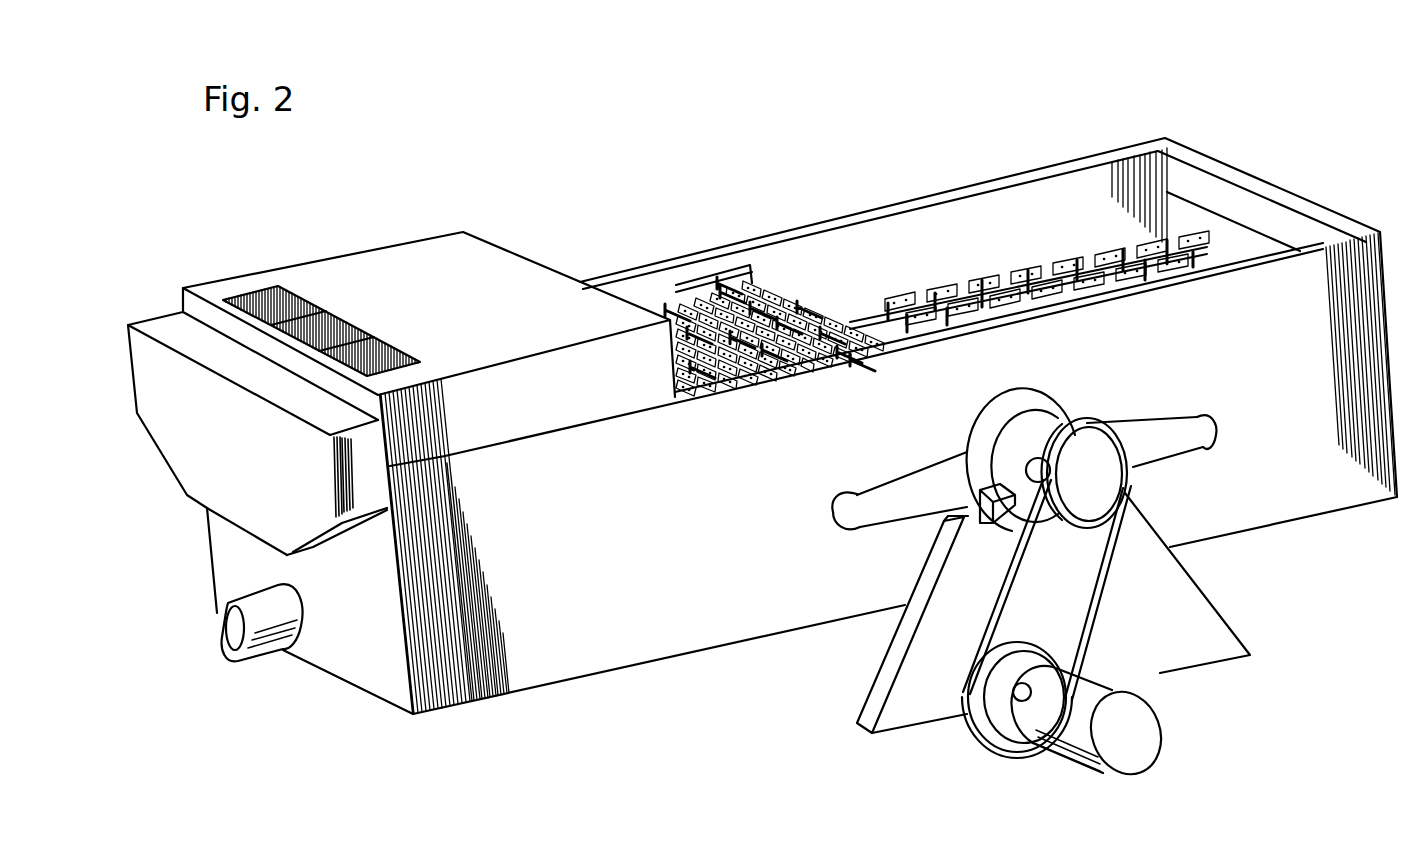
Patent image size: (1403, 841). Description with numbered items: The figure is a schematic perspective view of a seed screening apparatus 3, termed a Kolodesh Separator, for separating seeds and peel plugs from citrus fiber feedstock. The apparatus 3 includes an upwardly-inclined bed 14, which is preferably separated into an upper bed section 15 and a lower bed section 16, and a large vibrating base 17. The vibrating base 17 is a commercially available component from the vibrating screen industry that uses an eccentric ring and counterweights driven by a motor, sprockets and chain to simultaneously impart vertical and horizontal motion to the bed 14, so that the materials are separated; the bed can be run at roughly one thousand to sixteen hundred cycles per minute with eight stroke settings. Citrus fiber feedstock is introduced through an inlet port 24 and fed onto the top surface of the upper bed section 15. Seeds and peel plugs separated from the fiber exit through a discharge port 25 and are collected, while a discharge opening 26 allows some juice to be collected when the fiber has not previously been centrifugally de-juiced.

The seed screening apparatus 3 is at (439, 188).
The upwardly-inclined bed 14 is at (820, 219).
The upper bed section 15 is at (678, 317).
The lower bed section 16 is at (1003, 278).
The vibrating base 17 is at (708, 562).
The inlet port 24 is at (268, 293).
The discharge port 25 is at (235, 527).
The discharge opening 26 is at (267, 613).